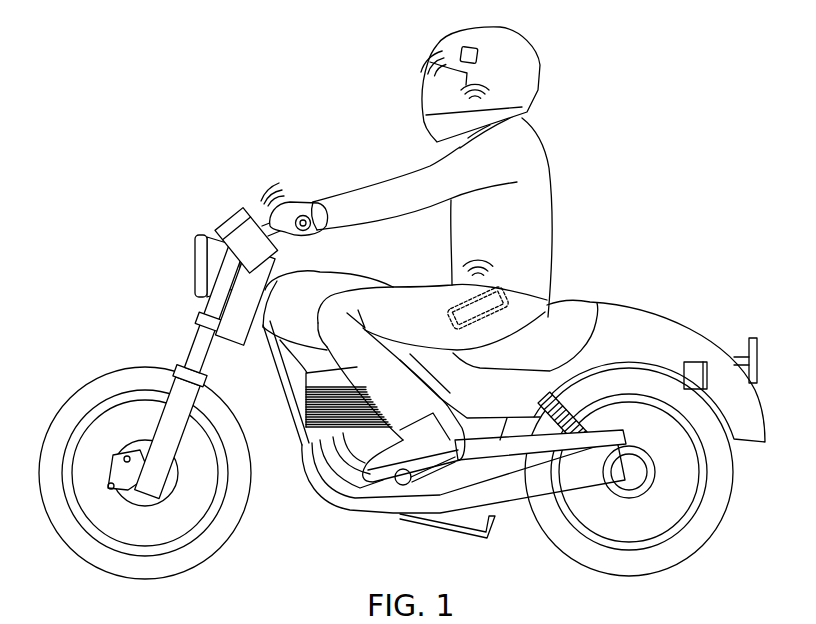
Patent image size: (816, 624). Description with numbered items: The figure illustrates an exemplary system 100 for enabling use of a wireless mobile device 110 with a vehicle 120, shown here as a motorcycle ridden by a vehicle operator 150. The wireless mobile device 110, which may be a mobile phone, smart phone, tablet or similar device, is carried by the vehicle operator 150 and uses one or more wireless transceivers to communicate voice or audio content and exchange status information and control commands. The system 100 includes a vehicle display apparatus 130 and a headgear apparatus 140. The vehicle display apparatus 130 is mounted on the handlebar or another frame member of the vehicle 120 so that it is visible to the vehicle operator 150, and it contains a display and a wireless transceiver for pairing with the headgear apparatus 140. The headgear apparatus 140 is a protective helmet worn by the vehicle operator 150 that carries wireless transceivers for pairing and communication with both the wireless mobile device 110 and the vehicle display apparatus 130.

The system 100 is at (616, 96).
The wireless mobile device 110 is at (465, 305).
The vehicle 120 is at (640, 318).
The vehicle display apparatus 130 is at (249, 204).
The headgear apparatus 140 is at (520, 44).
The vehicle operator 150 is at (548, 165).